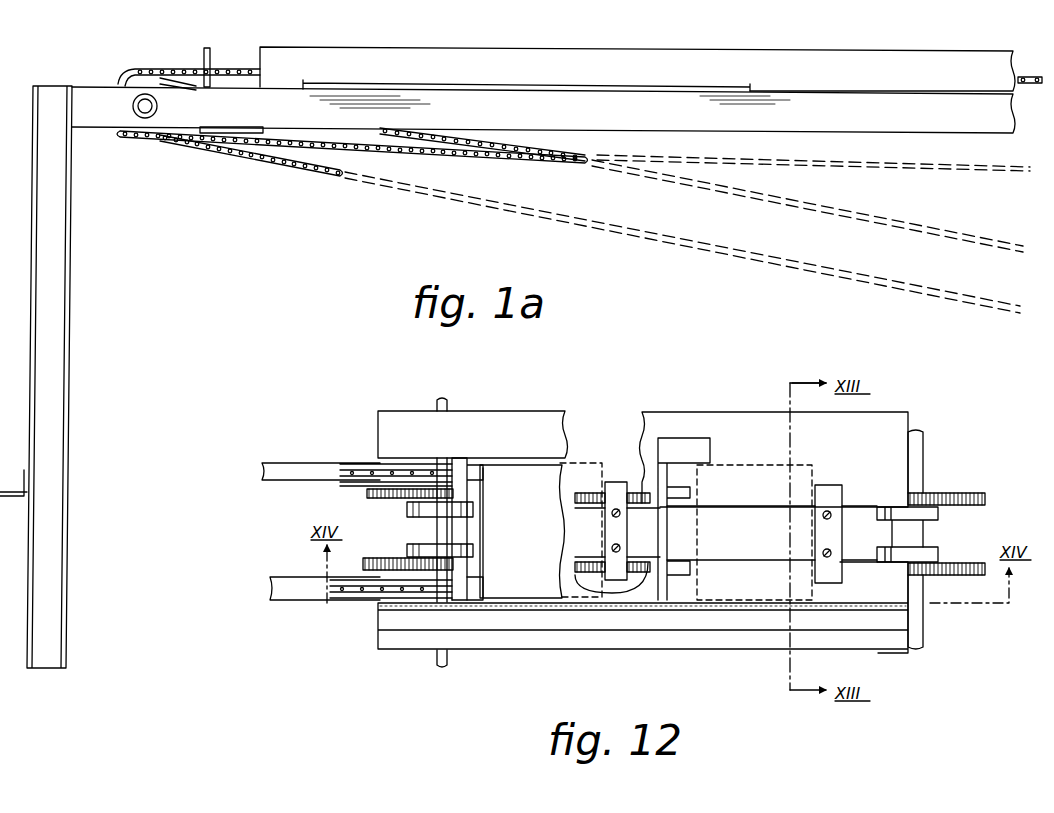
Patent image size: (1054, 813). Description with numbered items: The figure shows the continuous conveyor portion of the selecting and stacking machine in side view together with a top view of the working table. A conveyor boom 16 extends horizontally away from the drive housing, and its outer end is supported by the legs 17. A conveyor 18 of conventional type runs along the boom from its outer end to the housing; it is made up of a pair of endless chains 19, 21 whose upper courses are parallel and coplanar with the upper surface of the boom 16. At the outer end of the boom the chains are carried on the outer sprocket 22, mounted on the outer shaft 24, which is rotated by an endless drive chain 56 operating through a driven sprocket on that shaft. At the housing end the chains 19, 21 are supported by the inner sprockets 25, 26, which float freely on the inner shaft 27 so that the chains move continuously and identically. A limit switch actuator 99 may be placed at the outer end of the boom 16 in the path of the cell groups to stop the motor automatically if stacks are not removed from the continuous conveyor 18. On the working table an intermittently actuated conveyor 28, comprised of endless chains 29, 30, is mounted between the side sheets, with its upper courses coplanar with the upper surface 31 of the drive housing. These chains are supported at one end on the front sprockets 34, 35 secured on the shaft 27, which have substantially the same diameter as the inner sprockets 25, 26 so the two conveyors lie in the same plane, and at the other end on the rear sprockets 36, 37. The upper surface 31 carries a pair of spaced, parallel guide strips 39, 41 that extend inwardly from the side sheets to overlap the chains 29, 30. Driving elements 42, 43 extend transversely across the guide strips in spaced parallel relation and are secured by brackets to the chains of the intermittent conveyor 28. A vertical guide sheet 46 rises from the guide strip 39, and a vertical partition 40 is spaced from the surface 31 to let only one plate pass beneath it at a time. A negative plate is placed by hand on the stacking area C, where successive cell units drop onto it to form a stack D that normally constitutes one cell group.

In FIG. 1A, the conveyor boom 16 is at (84, 98).
In FIG. 1A, the legs 17 is at (68, 290).
In FIG. 1A, the conveyor 18 is at (160, 70).
In FIG. 1A, the endless chain 19 is at (215, 70).
In FIG. 12, the endless chain 19 is at (300, 590).
In FIG. 12, the endless chain 21 is at (318, 470).
In FIG. 1A, the outer sprocket 22 is at (150, 80).
In FIG. 1A, the outer shaft 24 is at (137, 112).
In FIG. 12, the inner sprocket 25 is at (398, 576).
In FIG. 12, the inner sprocket 26 is at (395, 502).
In FIG. 12, the inner shaft 27 is at (435, 523).
In FIG. 12, the intermittently actuated conveyor 28 is at (580, 488).
In FIG. 12, the endless chain 29 is at (590, 560).
In FIG. 12, the endless chain 30 is at (585, 506).
In FIG. 12, the upper surface 31 is at (510, 415).
In FIG. 12, the front sprocket 34 is at (365, 560).
In FIG. 12, the front sprocket 35 is at (365, 493).
In FIG. 12, the rear sprocket 36 is at (948, 562).
In FIG. 12, the rear sprocket 37 is at (950, 492).
In FIG. 12, the guide strip 39 is at (470, 574).
In FIG. 12, the vertical partition 40 is at (665, 596).
In FIG. 12, the guide strip 41 is at (468, 492).
In FIG. 12, the driving element 42 is at (617, 485).
In FIG. 12, the driving element 43 is at (828, 488).
In FIG. 12, the vertical guide sheet 46 is at (540, 610).
In FIG. 1A, the endless drive chain 56 is at (232, 150).
In FIG. 1A, the limit switch actuator 99 is at (210, 50).
In FIG. 12, the stacking area C is at (495, 610).
In FIG. 12, the stack D is at (523, 592).